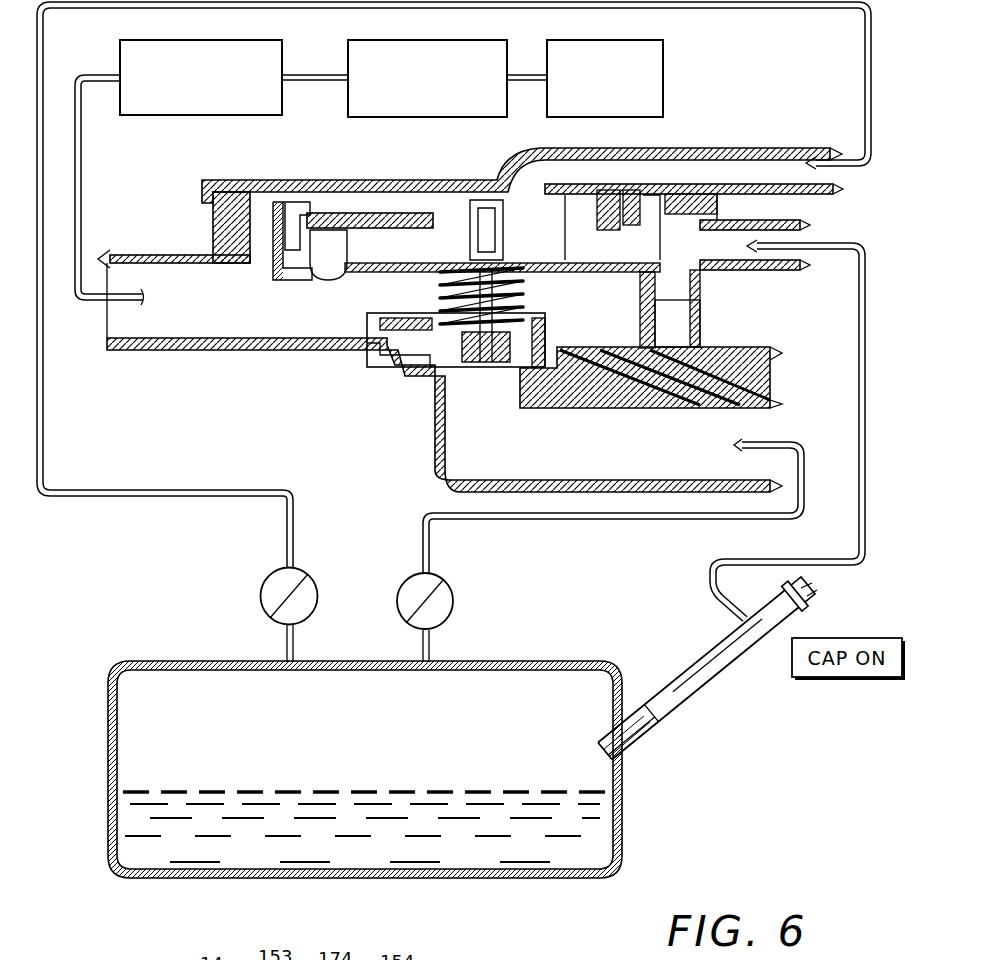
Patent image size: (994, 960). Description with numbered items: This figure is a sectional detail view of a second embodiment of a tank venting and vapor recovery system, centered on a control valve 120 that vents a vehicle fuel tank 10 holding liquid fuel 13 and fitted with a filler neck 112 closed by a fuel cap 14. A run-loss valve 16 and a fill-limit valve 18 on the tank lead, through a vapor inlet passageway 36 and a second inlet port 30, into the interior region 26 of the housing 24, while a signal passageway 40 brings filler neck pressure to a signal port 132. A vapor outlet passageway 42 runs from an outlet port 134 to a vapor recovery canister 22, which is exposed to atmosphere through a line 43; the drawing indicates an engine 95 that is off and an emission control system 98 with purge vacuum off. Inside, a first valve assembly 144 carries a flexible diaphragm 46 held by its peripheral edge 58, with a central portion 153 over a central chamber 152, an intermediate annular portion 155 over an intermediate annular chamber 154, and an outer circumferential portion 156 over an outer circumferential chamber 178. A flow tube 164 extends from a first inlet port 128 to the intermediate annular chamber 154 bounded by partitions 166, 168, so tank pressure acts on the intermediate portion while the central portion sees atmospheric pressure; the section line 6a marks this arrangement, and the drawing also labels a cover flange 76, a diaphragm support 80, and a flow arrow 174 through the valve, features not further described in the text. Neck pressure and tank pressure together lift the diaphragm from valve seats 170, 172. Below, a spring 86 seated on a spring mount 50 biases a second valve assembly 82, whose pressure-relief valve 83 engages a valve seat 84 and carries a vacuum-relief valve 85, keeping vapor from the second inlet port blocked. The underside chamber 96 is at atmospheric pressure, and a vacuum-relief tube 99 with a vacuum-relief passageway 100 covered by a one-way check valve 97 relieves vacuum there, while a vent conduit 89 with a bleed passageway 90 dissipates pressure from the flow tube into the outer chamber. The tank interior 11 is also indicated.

The fuel tank 10 is at (100, 708).
The fuel tank interior 11 is at (532, 690).
The liquid fuel 13 is at (568, 848).
The fuel cap 14 is at (812, 597).
The run-loss valve 16 is at (317, 582).
The fill-limit valve 18 is at (453, 593).
The vapor recovery canister 22 is at (188, 118).
The housing 24 is at (395, 373).
The interior region 26 is at (240, 325).
The second inlet port 30 is at (775, 410).
The vapor inlet passageway 36 is at (45, 72).
The signal passageway 40 is at (857, 332).
The vapor outlet passageway 42 is at (78, 213).
The line 43 is at (320, 80).
The flexible diaphragm 46 is at (660, 380).
The spring mount 50 is at (470, 345).
The peripheral edge 58 is at (293, 273).
The cover flange 76 is at (312, 180).
The diaphragm support 80 is at (363, 212).
The second valve assembly 82 is at (488, 378).
The pressure-relief valve 83 is at (335, 355).
The valve seat 84 is at (580, 370).
The vacuum-relief valve 85 is at (467, 374).
The spring 86 is at (440, 280).
The vent conduit 89 is at (670, 188).
The bleed passageway 90 is at (670, 233).
The engine 95 is at (650, 40).
The chamber 96 is at (280, 322).
The one-way umbrella-type check valve 97 is at (660, 350).
The emission control system 98 is at (463, 40).
The vacuum-relief tube 99 is at (738, 272).
The vacuum-relief passageway 100 is at (690, 338).
The filler neck 112 is at (700, 660).
The control valve 120 is at (774, 84).
The first inlet port 128 is at (838, 156).
The signal port 132 is at (803, 257).
The outlet port 134 is at (110, 270).
The first valve assembly 144 is at (240, 304).
The central chamber 152 is at (483, 220).
The central portion 153 is at (568, 235).
The intermediate annular chamber 154 is at (560, 250).
The intermediate annular portion 155 is at (402, 248).
The outer circumferential portion 156 is at (696, 276).
The flow tube 164 is at (684, 146).
The partition 166 is at (473, 187).
The partition 168 is at (413, 257).
The valve seat 170 is at (430, 268).
The valve seat 172 is at (577, 268).
The flow arrow 174 is at (478, 232).
The outer circumferential chamber 178 is at (322, 180).
The section line 6a is at (443, 257).